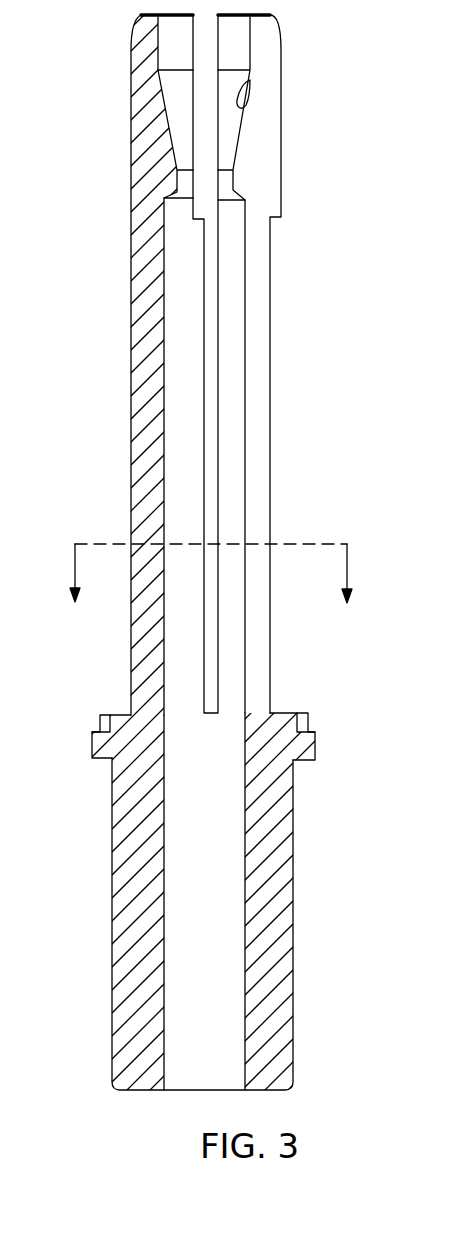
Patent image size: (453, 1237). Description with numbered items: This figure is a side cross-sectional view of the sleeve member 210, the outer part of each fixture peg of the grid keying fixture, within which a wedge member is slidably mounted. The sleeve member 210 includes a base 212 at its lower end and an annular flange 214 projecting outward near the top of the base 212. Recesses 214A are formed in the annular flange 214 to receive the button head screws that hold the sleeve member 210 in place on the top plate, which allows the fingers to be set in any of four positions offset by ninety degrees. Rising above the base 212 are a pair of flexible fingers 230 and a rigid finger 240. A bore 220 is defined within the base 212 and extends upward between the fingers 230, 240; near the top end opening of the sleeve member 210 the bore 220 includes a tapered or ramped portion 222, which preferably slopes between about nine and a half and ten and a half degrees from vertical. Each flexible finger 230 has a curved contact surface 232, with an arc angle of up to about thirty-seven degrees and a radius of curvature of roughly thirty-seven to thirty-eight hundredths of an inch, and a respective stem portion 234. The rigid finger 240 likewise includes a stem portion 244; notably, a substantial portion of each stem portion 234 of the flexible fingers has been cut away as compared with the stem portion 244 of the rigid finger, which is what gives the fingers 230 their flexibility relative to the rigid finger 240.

The sleeve member 210 is at (100, 299).
The base 212 is at (293, 872).
The annular flange 214 is at (317, 745).
The recesses 214A is at (312, 720).
The bore 220 is at (225, 828).
The tapered portion 222 is at (250, 80).
The flexible finger 230 is at (296, 182).
The curved contact surface 232 is at (282, 42).
The stem portion 234 is at (270, 418).
The rigid finger 240 is at (120, 169).
The stem portion 244 is at (130, 400).